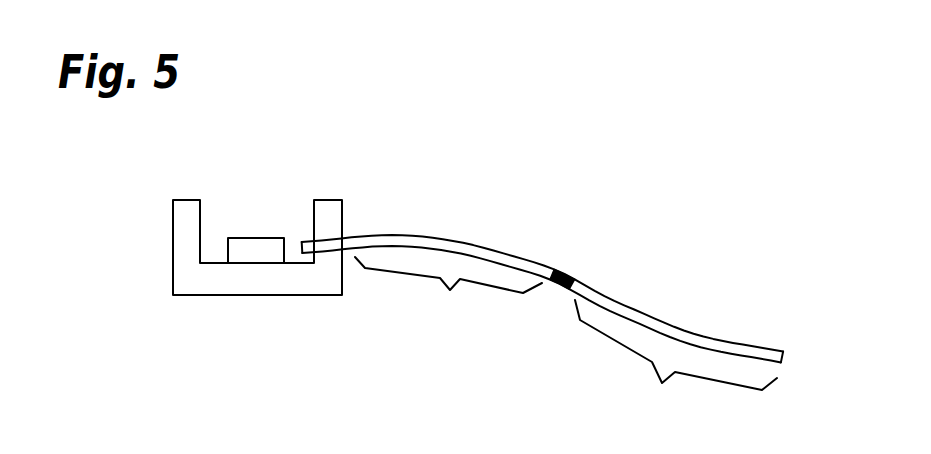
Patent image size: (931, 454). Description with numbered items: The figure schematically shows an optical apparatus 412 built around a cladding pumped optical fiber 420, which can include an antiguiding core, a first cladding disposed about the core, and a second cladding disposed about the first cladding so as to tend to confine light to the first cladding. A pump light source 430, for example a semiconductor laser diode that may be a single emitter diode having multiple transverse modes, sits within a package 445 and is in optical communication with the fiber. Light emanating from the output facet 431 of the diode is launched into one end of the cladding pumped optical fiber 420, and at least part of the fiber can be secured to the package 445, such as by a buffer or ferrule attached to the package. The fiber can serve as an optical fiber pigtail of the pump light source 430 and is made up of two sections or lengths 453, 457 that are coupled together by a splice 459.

The optical apparatus 412 is at (275, 127).
The cladding pumped optical fiber 420 is at (497, 252).
The pump light source 430 is at (257, 252).
The output facet 431 is at (288, 244).
The package 445 is at (183, 277).
The section of fiber 453 is at (448, 292).
The section of fiber 457 is at (676, 360).
The splice 459 is at (558, 286).